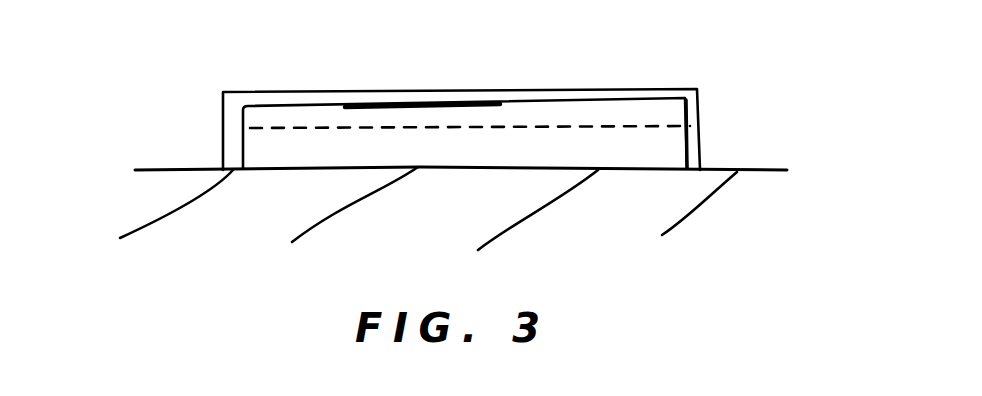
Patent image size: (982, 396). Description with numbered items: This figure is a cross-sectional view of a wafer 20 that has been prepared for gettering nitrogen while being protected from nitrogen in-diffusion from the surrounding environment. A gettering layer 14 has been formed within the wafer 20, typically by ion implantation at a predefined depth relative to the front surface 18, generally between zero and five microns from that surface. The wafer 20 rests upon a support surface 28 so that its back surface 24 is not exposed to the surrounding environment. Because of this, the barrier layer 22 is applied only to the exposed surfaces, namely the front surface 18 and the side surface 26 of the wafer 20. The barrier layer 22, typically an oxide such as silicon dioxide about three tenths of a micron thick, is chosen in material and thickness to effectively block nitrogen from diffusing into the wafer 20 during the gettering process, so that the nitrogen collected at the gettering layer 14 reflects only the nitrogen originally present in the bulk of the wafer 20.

The gettering layer 14 is at (655, 128).
The front surface 18 is at (505, 93).
The wafer 20 is at (297, 128).
The barrier layer 22 is at (385, 93).
The back surface 24 is at (304, 172).
The side surface 26 is at (243, 140).
The support surface 28 is at (732, 205).